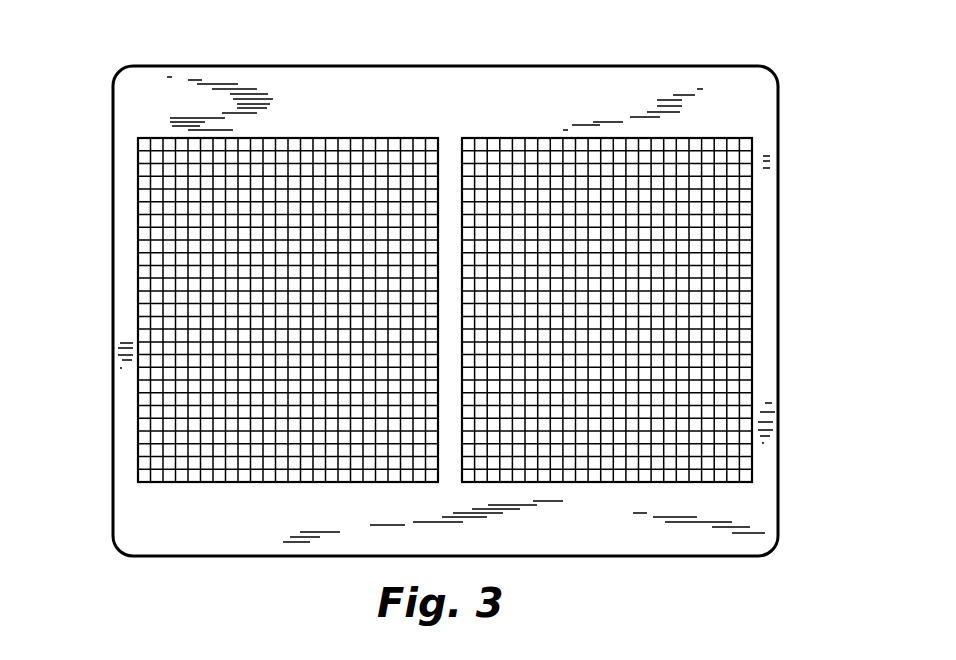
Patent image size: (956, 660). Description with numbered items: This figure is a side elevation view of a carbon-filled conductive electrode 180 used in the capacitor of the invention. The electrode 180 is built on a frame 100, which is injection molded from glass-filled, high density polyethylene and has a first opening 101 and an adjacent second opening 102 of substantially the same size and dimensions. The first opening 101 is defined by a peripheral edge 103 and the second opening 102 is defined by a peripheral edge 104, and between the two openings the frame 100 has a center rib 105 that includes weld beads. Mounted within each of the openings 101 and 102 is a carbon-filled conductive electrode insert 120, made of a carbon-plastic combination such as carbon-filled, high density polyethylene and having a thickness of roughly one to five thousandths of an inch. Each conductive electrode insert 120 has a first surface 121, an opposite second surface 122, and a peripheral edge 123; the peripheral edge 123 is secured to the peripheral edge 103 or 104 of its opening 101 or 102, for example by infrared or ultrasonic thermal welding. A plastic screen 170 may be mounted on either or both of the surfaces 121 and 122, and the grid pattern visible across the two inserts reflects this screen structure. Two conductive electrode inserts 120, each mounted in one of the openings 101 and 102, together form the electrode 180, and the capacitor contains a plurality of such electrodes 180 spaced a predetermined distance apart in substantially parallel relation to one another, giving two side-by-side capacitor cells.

The frame 100 is at (623, 90).
The first opening 101 is at (753, 240).
The second opening 102 is at (143, 162).
The peripheral edge 103 is at (622, 473).
The peripheral edge 104 is at (283, 473).
The center rib 105 is at (452, 142).
The conductive electrode insert 120 is at (270, 142).
The first surface 121 is at (183, 310).
The second surface 122 is at (193, 217).
The peripheral edge 123 is at (192, 475).
The plastic screen 170 is at (436, 143).
The electrode 180 is at (786, 354).